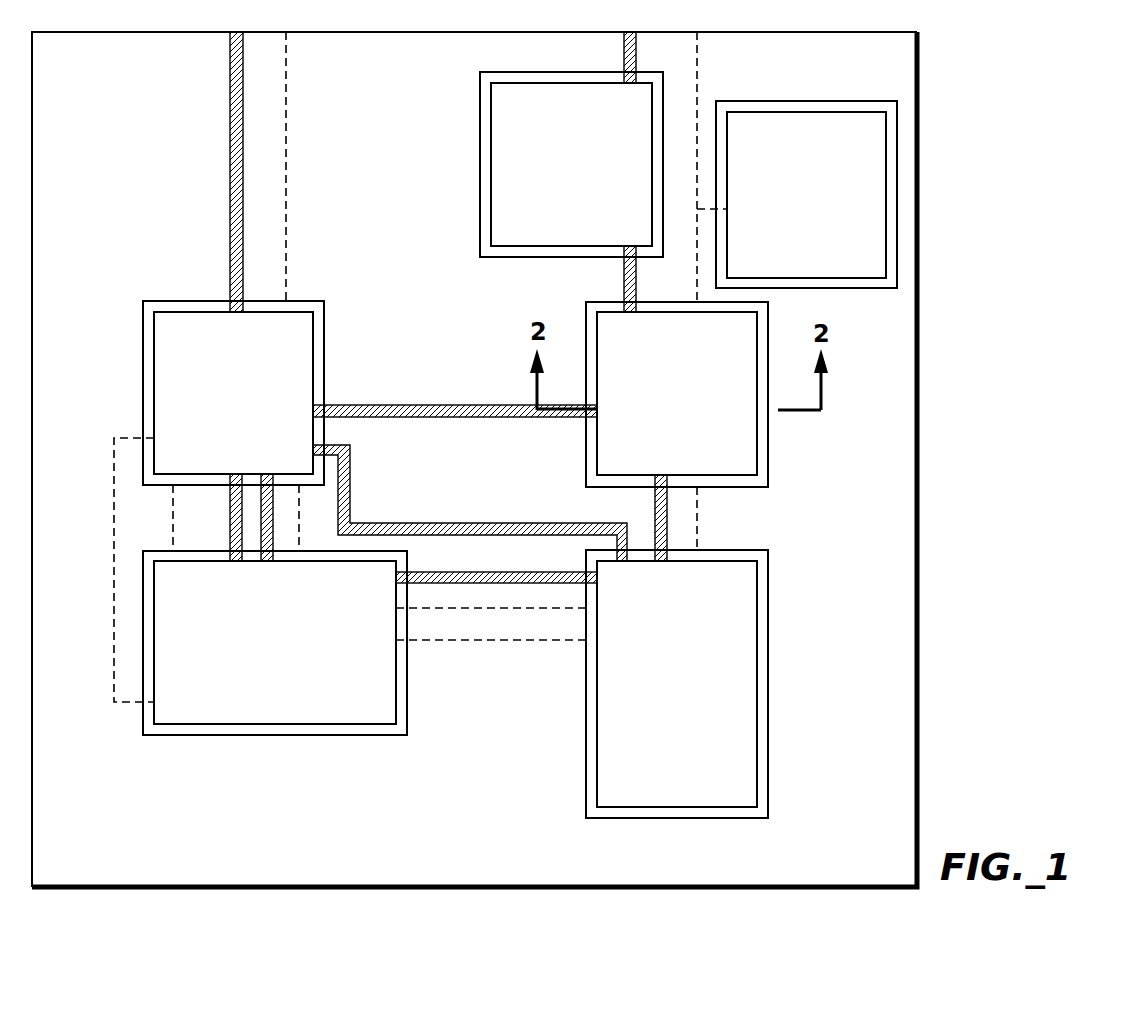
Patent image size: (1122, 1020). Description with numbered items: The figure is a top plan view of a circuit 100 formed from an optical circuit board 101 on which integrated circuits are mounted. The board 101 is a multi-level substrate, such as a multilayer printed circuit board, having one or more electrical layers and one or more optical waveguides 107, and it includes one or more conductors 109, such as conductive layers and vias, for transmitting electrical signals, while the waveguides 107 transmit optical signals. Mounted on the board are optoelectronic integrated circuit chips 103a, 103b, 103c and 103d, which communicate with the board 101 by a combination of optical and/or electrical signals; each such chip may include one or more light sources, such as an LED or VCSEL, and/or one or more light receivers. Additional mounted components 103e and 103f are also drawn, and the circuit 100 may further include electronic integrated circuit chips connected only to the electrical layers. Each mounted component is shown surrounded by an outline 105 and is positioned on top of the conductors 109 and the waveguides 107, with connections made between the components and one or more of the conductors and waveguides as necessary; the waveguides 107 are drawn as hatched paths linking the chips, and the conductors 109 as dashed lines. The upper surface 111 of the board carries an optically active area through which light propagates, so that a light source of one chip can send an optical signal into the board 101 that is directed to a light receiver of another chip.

The circuit 100 is at (937, 169).
The optical circuit board 101 is at (918, 340).
The optoelectronic integrated circuit chip 103a is at (207, 337).
The optoelectronic integrated circuit chip 103b is at (208, 588).
The optoelectronic integrated circuit chip 103c is at (657, 586).
The optoelectronic integrated circuit chip 103d is at (654, 338).
The module 103e is at (547, 109).
The module 103f is at (782, 138).
The module frame 105 is at (143, 385).
The optical waveguide 107 is at (567, 536).
The conductor 109 is at (428, 610).
The surface 111 is at (76, 58).